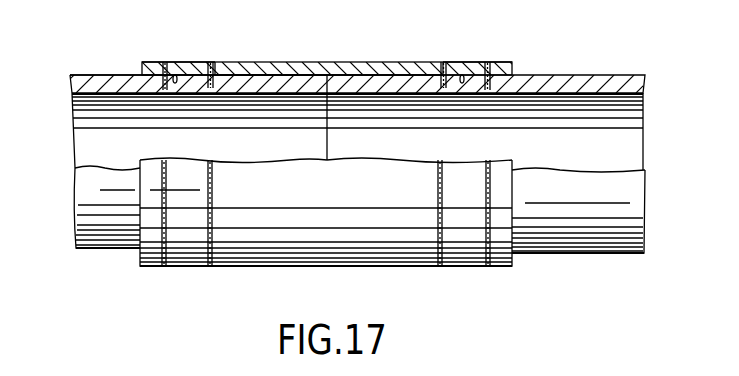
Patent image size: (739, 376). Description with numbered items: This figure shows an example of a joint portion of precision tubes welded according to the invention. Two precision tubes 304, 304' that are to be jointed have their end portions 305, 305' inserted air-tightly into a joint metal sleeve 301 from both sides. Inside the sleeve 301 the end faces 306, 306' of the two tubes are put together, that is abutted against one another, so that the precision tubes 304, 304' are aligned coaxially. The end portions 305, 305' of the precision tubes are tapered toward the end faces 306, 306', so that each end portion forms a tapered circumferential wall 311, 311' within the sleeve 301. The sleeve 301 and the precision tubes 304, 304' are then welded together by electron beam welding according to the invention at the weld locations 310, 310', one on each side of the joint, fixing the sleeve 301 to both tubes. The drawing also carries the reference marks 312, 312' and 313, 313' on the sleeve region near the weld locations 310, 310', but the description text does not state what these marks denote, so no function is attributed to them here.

The joint metal sleeve 301 is at (265, 63).
The precision tube 304 is at (193, 146).
The precision tube 304' is at (485, 149).
The end portion 305 is at (201, 51).
The end portion 305' is at (445, 54).
The end face 306 is at (234, 170).
The end face 306' is at (419, 200).
The weld 310 is at (146, 60).
The weld 310' is at (515, 61).
The tapered circumferential wall 311 is at (271, 58).
The tapered circumferential wall 311' is at (385, 59).
The pin 312 is at (224, 44).
The pin 312' is at (439, 59).
The hole 313 is at (185, 52).
The hole 313' is at (481, 42).